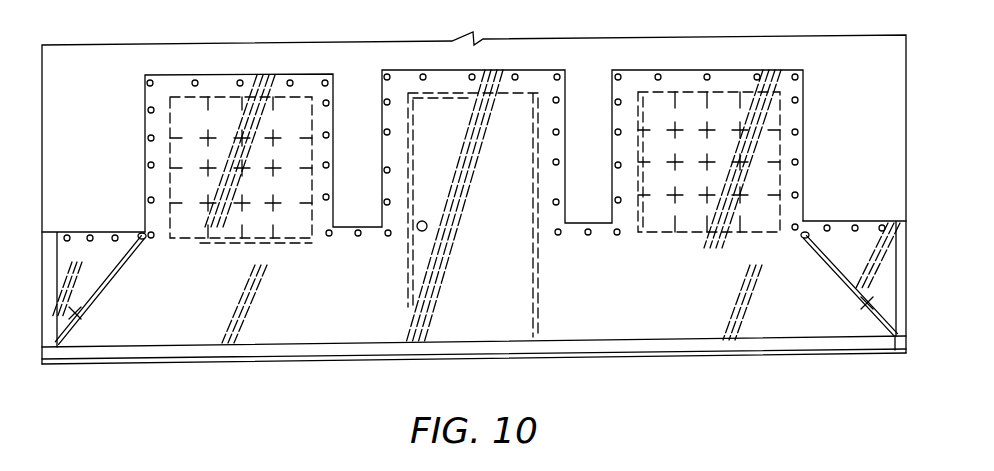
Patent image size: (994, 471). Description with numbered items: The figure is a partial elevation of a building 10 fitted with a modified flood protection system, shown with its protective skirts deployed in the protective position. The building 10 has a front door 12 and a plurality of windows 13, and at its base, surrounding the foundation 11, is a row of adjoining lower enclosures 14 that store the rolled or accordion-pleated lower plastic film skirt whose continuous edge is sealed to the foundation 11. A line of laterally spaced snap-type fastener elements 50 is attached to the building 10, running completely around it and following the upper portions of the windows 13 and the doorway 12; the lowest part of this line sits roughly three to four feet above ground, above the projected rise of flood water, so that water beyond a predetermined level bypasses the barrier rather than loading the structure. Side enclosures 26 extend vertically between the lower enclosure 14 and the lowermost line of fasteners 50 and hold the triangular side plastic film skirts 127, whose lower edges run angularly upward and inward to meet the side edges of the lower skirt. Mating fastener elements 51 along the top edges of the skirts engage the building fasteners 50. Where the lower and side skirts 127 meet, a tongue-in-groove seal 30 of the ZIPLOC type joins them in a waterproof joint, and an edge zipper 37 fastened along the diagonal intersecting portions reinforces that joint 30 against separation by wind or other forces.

The building 10 is at (78, 76).
The foundation 11 is at (170, 360).
The front door 12 is at (415, 157).
The windows 13 is at (236, 243).
The lower enclosure 14 is at (228, 353).
The side enclosure 26 is at (55, 300).
The tongue-in-groove seal 30 is at (101, 289).
The edge zipper 37 is at (146, 241).
The fastener element 50 is at (240, 80).
The mating fastener element 51 is at (472, 80).
The side plastic film skirt 127 is at (77, 316).